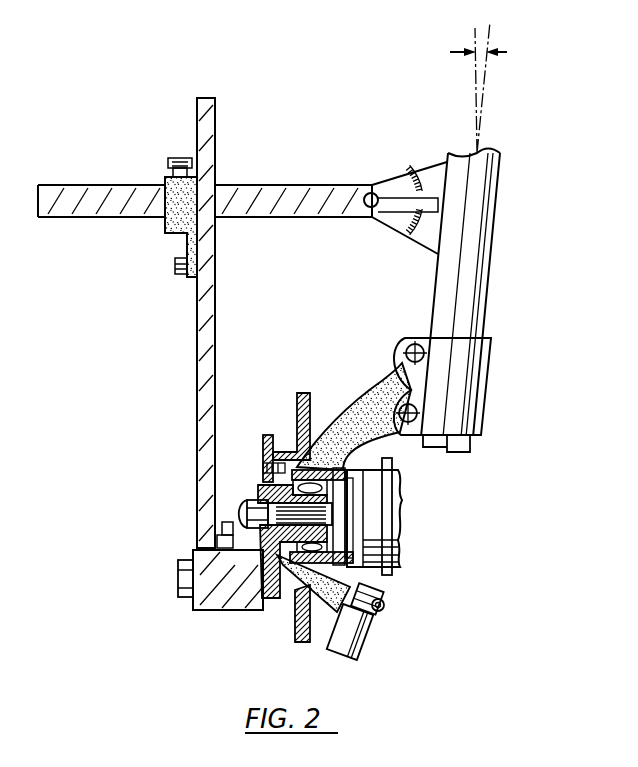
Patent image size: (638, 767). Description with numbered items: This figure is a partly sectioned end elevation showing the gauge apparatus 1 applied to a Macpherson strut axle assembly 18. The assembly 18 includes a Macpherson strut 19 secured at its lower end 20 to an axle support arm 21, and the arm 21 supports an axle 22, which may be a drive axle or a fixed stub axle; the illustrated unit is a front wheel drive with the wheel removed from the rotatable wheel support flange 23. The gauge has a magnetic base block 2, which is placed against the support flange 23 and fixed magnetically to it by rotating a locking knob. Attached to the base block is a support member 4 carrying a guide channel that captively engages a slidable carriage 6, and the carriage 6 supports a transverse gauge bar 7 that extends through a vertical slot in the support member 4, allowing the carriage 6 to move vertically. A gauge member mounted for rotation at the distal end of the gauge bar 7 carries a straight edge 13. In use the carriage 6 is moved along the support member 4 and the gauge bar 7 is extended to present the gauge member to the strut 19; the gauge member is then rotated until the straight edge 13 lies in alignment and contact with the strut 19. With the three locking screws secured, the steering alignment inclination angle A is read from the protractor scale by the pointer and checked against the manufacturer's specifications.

The gauge apparatus 1 is at (148, 407).
The magnetic base block 2 is at (203, 597).
The support member 4 is at (207, 320).
The slidable carriage 6 is at (178, 187).
The transverse gauge bar 7 is at (270, 192).
The straight edge 13 is at (449, 192).
The Macpherson strut axle assembly 18 is at (450, 479).
The Macpherson strut 19 is at (475, 250).
The lower end 20 is at (462, 427).
The axle support arm 21 is at (348, 418).
The axle 22 is at (340, 515).
The rotatable wheel support flange 23 is at (262, 446).
The steering alignment inclination angle A is at (485, 46).